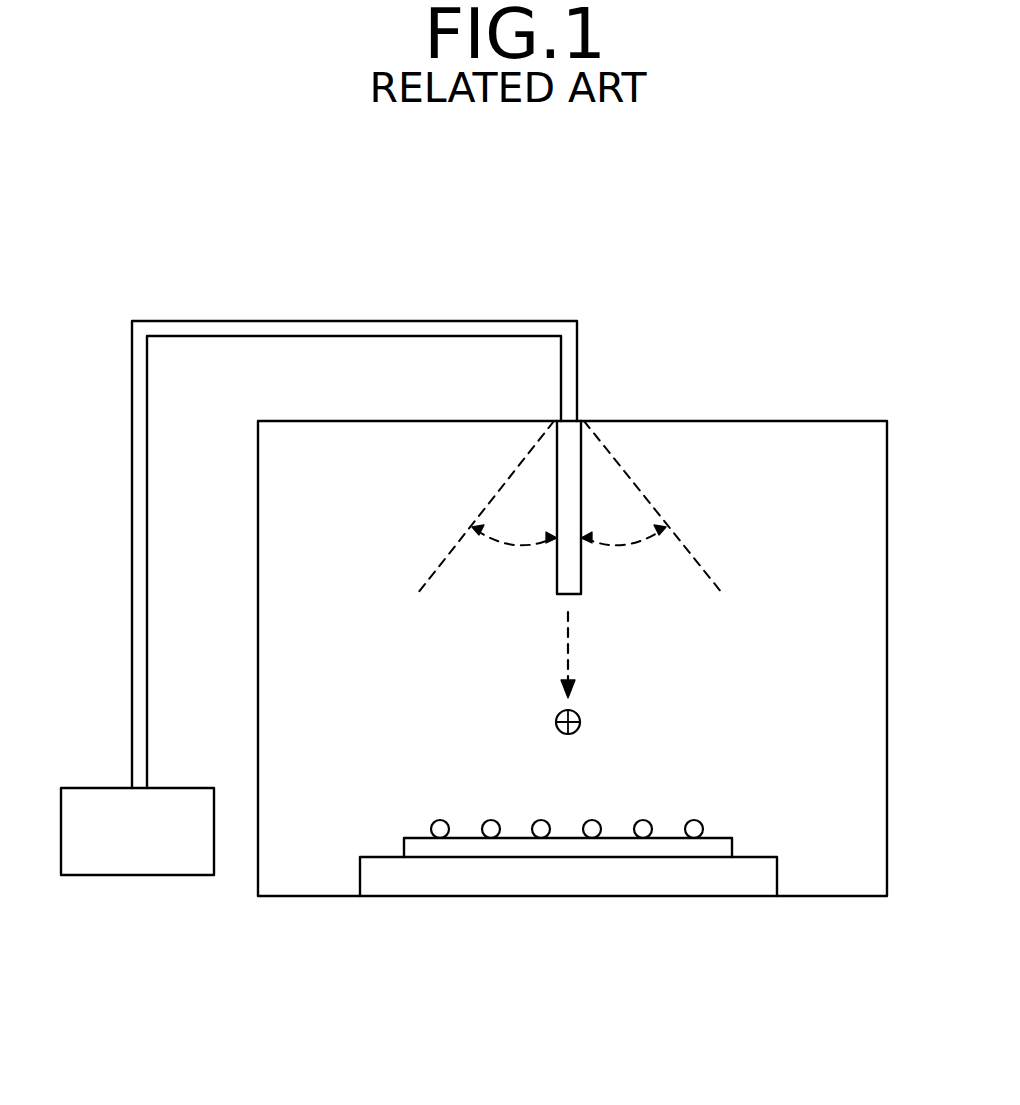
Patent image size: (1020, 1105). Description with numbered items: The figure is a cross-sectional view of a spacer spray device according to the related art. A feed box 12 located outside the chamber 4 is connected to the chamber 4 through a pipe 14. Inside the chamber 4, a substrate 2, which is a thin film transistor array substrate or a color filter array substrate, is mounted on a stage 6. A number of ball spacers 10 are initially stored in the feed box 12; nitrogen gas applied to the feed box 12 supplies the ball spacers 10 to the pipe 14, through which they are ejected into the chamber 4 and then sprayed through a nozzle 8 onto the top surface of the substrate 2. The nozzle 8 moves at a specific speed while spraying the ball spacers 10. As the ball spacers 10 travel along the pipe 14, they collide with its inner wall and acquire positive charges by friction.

The substrate 2 is at (734, 838).
The chamber 4 is at (887, 720).
The stage 6 is at (777, 875).
The nozzle 8 is at (581, 583).
The ball spacers 10 is at (580, 722).
The feed box 12 is at (137, 875).
The pipe 14 is at (148, 598).